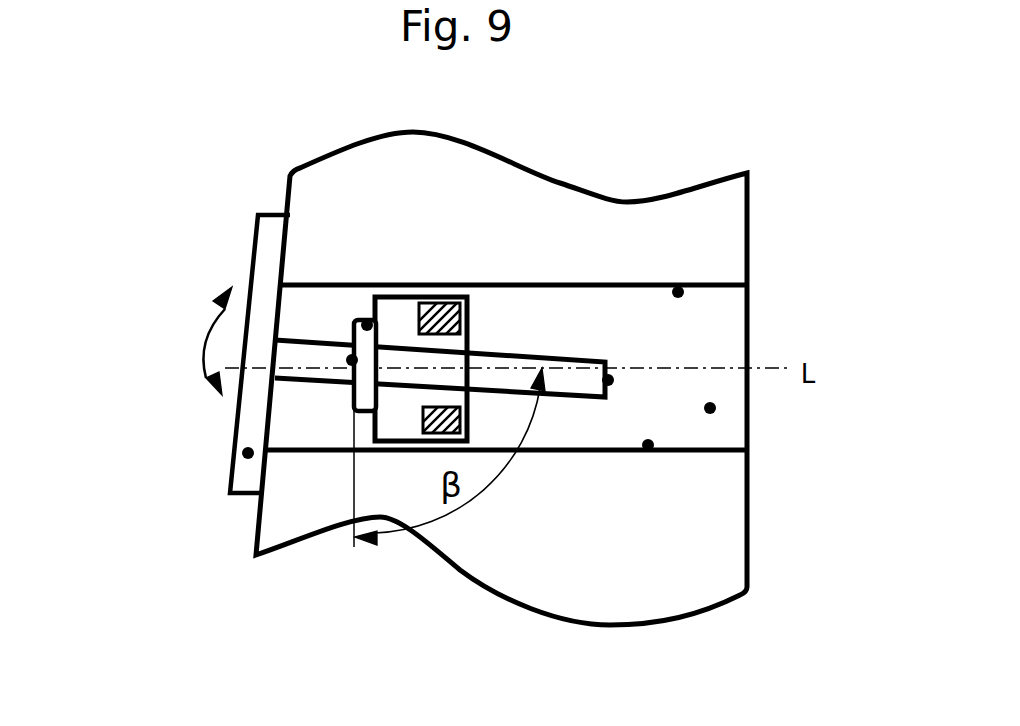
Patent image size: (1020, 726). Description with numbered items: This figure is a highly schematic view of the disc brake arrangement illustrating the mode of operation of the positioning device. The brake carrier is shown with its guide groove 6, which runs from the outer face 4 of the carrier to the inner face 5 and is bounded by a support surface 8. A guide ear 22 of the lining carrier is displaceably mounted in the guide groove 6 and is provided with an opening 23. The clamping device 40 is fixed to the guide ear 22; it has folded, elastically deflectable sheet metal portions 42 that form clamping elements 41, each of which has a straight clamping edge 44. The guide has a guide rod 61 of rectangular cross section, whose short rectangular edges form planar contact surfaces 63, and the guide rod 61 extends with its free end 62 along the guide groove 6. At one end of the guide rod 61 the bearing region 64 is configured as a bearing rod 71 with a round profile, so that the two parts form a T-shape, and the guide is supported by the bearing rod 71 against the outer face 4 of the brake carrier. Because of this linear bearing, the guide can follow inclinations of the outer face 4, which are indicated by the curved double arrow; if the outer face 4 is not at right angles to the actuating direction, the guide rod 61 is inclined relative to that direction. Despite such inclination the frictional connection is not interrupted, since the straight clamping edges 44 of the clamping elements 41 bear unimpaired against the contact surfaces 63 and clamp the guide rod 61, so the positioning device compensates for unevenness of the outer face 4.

The outer face 4 is at (133, 349).
The inner face 5 is at (787, 520).
The guide groove 6 is at (777, 338).
The support surface 8 is at (710, 408).
The guide ear 22 is at (438, 318).
The opening 23 is at (397, 418).
The clamping device 40 is at (408, 240).
The clamping element 41 is at (300, 304).
The folded sheet metal portion 42 is at (367, 325).
The straight clamping edge 44 is at (352, 360).
The guide rod 61 is at (566, 320).
The free end 62 is at (608, 380).
The contact surface 63 is at (511, 378).
The bearing region 64 is at (246, 397).
The bearing rod 71 is at (248, 453).